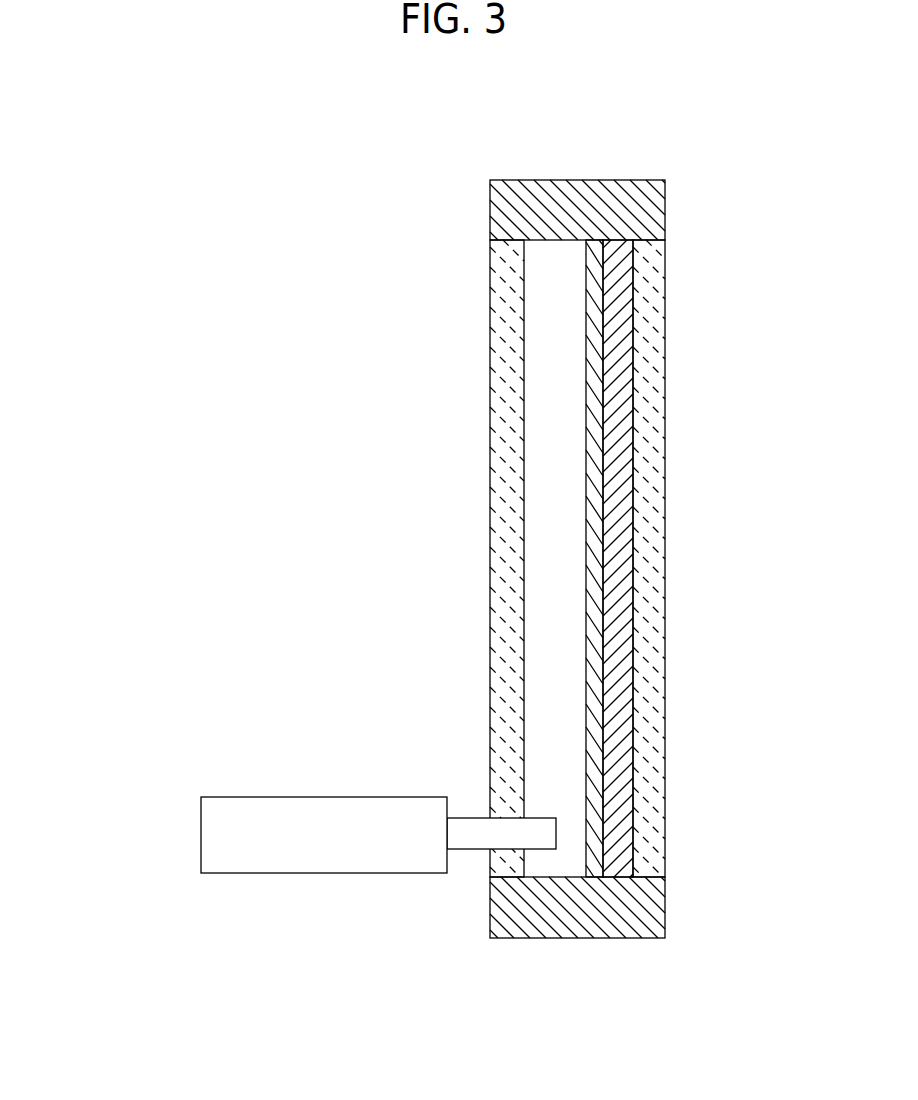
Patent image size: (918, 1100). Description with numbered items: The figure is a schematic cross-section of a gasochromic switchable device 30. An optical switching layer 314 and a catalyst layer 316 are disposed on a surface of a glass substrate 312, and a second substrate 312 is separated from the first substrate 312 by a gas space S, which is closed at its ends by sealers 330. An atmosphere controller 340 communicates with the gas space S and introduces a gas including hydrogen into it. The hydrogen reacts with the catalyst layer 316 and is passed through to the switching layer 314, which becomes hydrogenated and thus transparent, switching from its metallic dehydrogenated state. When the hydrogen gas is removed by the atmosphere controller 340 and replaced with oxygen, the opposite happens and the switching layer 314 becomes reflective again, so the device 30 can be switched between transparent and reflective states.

The substrate processing apparatus 30 is at (141, 437).
The substrate 312 is at (505, 432).
The optical switching layer 314 is at (620, 478).
The catalyst layer 316 is at (598, 522).
The sealer 330 is at (553, 190).
The atmosphere controller 340 is at (350, 797).
The gas space S is at (556, 377).